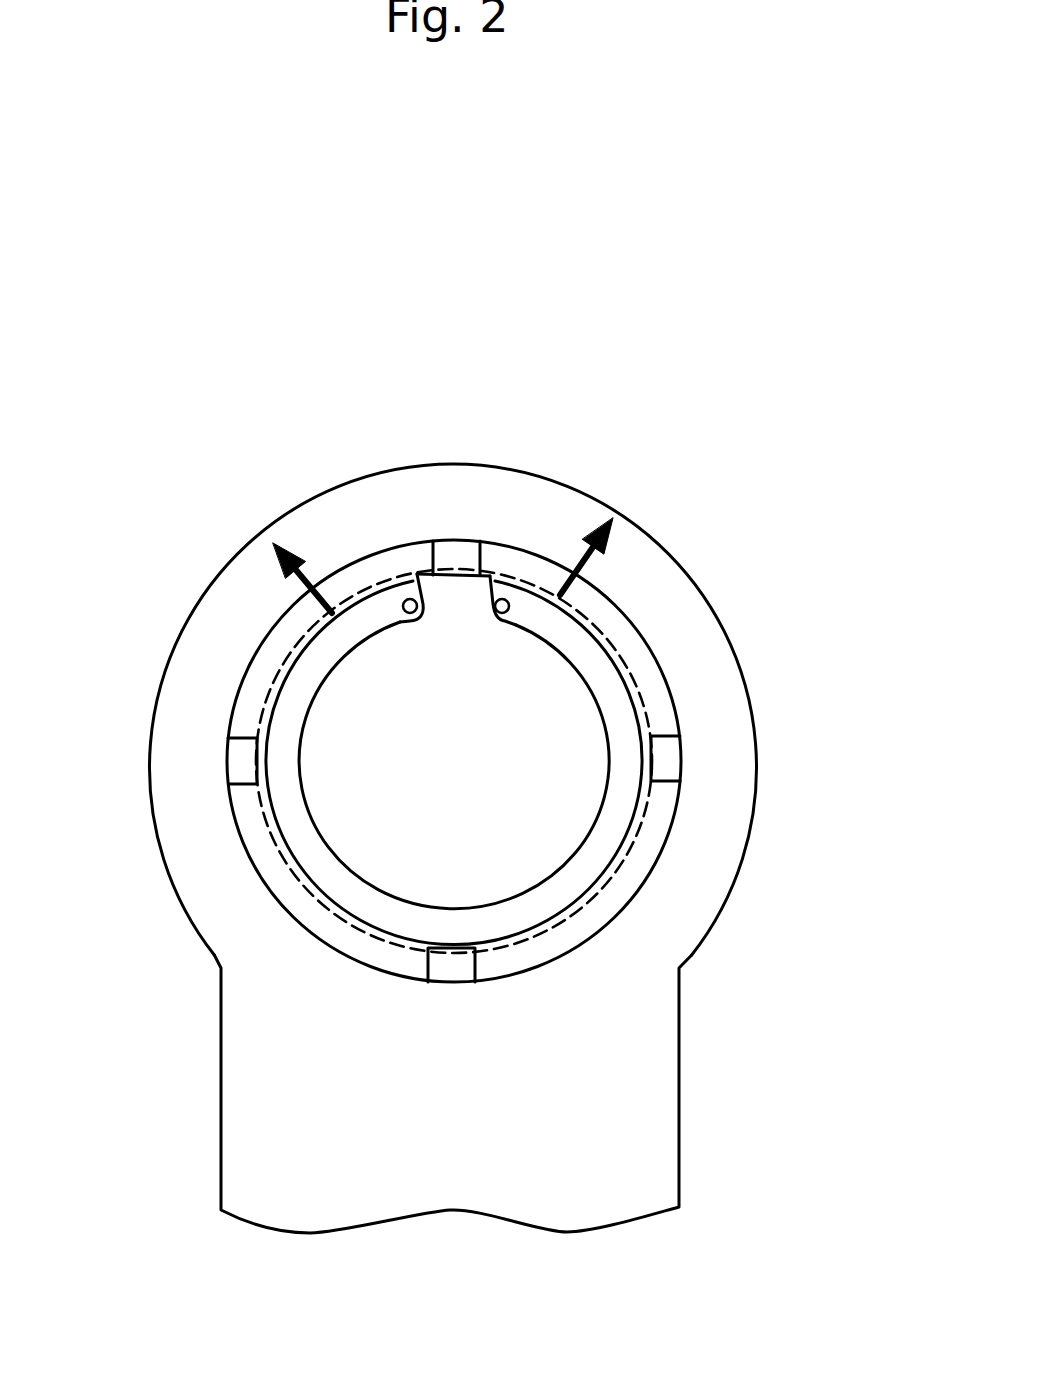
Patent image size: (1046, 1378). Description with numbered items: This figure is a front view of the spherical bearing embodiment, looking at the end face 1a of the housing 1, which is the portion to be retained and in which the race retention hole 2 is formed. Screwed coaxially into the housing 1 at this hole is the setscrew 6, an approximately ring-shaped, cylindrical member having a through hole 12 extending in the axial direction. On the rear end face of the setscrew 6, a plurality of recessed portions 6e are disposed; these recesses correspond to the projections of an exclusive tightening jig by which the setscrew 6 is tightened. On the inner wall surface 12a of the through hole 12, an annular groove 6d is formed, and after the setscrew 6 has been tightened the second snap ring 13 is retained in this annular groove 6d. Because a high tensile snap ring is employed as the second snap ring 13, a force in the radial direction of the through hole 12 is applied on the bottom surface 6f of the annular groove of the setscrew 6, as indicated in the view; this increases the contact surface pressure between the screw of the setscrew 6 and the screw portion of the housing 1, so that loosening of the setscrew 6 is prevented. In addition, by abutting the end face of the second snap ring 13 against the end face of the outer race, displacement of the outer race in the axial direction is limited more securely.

The housing 1 is at (519, 806).
The end face of housing 1a is at (697, 617).
The race retention hole 2 is at (501, 719).
The setscrew 6 is at (501, 719).
The annular groove 6d is at (268, 843).
The recessed portions 6e is at (458, 548).
The bottom surface of annular groove 6f is at (306, 662).
The through hole 12 is at (536, 921).
The inner wall surface of through hole 12a is at (318, 893).
The second snap ring 13 is at (454, 759).